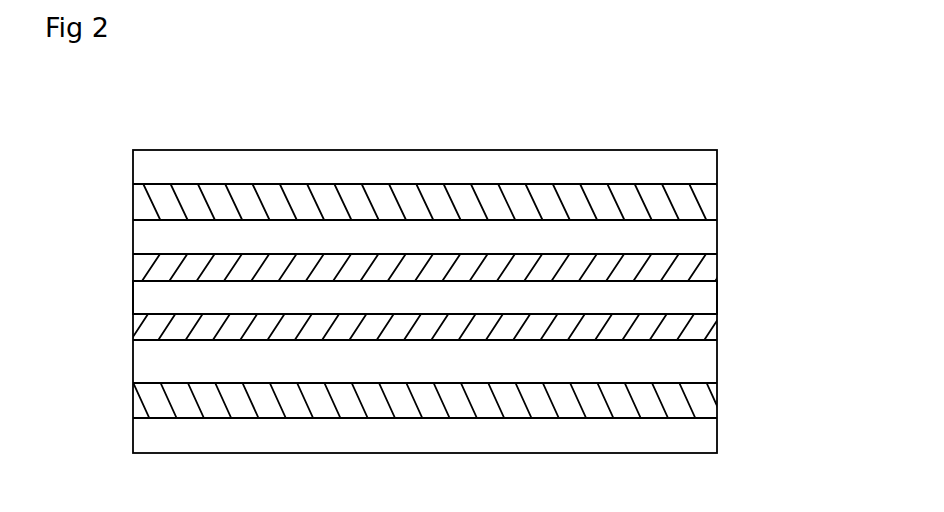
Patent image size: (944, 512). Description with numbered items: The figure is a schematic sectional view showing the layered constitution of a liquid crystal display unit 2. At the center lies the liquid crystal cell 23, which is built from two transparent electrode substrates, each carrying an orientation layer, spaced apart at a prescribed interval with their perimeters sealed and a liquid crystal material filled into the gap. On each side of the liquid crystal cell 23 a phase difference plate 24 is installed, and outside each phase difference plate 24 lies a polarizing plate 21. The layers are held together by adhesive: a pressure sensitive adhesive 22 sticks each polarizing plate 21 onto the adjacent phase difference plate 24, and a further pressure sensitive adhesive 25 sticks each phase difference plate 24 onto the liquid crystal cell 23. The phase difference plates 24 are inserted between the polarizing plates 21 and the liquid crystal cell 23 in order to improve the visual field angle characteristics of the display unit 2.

The liquid crystal display unit 2 is at (587, 115).
The polarizing plate 21 is at (800, 401).
The pressure sensitive adhesive 22 is at (800, 367).
The liquid crystal cell 23 is at (708, 307).
The phase difference plate 24 is at (800, 332).
The pressure sensitive adhesive 25 is at (708, 270).